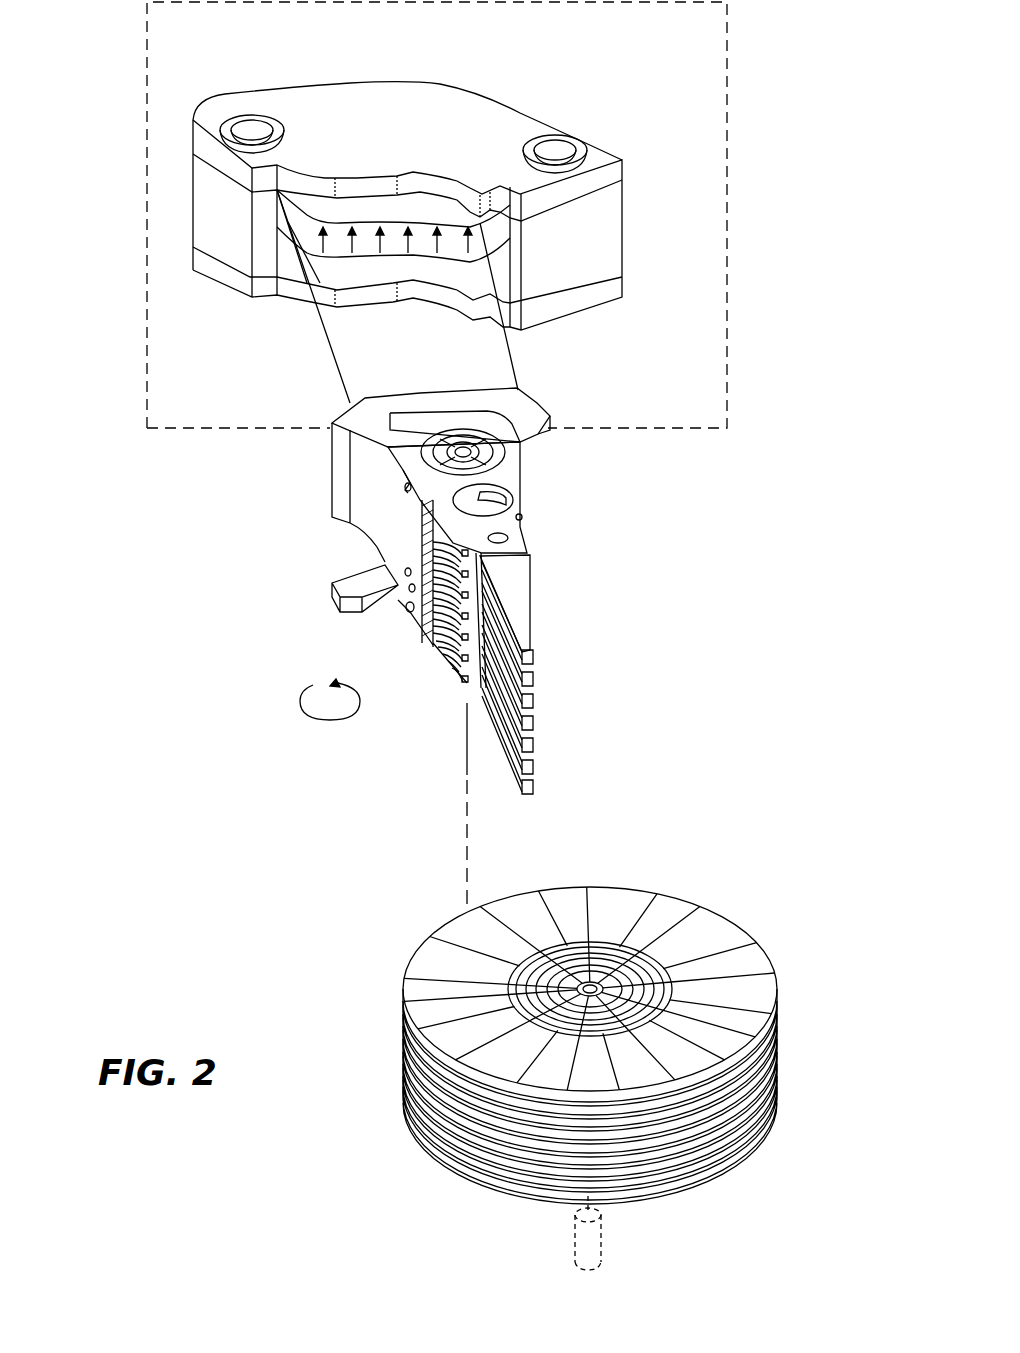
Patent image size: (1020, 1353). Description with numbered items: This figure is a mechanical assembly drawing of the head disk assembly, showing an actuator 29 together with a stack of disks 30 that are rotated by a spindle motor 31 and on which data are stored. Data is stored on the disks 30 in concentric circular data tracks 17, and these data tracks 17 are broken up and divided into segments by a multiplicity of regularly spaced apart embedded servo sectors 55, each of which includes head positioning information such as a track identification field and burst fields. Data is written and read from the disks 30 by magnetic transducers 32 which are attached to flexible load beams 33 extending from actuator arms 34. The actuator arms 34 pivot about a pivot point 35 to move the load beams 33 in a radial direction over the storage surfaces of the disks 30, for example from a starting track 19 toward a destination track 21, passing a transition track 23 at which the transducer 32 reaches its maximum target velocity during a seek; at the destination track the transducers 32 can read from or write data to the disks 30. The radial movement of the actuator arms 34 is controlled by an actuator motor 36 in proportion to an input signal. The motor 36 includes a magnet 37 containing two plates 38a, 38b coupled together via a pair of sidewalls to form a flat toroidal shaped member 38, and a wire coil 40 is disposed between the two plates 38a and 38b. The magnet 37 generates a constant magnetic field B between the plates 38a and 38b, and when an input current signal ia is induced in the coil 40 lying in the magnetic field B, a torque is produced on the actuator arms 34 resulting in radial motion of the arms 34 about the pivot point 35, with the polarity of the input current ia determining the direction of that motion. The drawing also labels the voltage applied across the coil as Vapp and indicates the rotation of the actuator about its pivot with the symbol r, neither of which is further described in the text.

The data tracks 17 is at (600, 957).
The starting track 19 is at (667, 1007).
The destination track 21 is at (640, 945).
The transition track 23 is at (680, 960).
The actuator 29 is at (424, 561).
The disks 30 is at (599, 1025).
The spindle motor 31 is at (575, 1245).
The magnetic transducers 32 is at (533, 680).
The flexible load beams 33 is at (522, 605).
The actuator arms 34 is at (520, 517).
The pivot point 35 is at (505, 470).
The actuator motor 36 is at (147, 343).
The magnet 37 is at (393, 183).
The flat toroidal shaped member 38 is at (612, 213).
The plate 38a is at (372, 200).
The plate 38b is at (352, 275).
The wire coil 40 is at (333, 422).
The embedded servo sectors 55 is at (420, 975).
The magnetic field B is at (300, 235).
The input current signal ia is at (371, 411).
The applied voltage Vapp is at (547, 408).
The rotation direction r is at (330, 686).